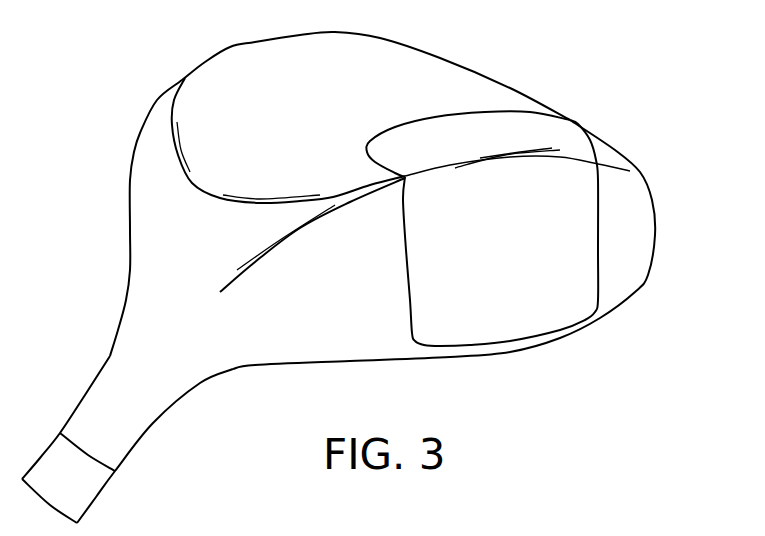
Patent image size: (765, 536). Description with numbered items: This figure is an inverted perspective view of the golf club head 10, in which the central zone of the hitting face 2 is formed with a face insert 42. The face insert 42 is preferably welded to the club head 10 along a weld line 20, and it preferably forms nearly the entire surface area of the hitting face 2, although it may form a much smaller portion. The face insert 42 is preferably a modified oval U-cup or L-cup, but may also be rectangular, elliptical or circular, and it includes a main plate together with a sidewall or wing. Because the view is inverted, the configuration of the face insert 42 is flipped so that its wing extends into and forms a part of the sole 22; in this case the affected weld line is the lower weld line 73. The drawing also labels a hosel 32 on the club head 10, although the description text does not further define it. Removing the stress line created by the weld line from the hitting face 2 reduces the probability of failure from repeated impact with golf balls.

The club head 10 is at (76, 77).
The hitting face 2 is at (637, 248).
The weld line 20 is at (598, 204).
The sole 22 is at (225, 145).
The hosel 32 is at (130, 283).
The face insert 42 is at (527, 260).
The lower weld line 73 is at (463, 113).